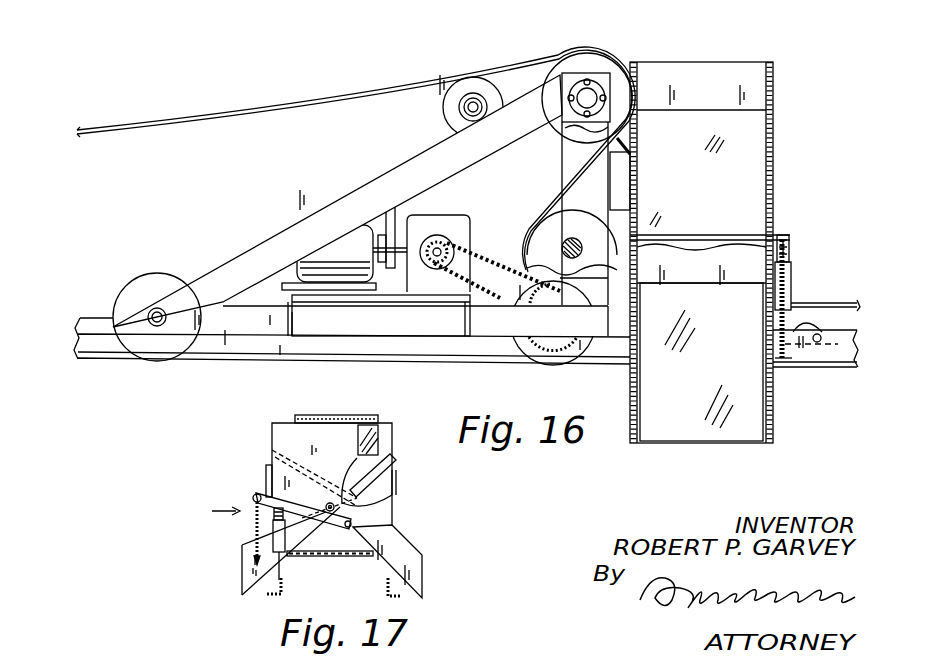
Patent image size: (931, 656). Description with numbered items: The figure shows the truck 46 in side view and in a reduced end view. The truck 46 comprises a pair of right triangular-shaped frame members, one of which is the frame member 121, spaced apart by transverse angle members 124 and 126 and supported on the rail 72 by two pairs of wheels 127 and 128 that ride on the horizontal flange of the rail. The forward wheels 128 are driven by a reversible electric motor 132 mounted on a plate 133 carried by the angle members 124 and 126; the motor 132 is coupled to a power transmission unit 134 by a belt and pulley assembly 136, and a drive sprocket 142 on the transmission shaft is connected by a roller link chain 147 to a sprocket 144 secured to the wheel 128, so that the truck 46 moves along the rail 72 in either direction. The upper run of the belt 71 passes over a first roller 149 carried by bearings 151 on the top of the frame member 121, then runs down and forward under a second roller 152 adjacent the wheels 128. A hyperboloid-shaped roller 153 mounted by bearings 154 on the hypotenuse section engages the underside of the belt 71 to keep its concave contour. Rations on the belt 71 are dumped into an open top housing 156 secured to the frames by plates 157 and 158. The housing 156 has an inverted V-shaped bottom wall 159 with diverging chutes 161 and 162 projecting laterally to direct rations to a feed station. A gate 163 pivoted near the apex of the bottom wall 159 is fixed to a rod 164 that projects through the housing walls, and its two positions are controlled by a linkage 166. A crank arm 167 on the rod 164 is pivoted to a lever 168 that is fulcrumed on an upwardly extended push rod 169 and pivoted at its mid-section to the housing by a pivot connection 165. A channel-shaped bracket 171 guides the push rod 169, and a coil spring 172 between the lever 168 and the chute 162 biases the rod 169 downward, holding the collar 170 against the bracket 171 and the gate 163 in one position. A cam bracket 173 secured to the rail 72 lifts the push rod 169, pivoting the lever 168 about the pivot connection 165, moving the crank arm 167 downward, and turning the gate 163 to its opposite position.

In FIG. 16, the truck 46 is at (493, 50).
In FIG. 16, the belt 71 is at (283, 105).
In FIG. 17, the belt 71 is at (332, 557).
In FIG. 16, the rail 72 is at (103, 348).
In FIG. 16, the frame member 121 is at (345, 197).
In FIG. 16, the angle member 124 is at (272, 290).
In FIG. 16, the angle member 126 is at (456, 322).
In FIG. 16, the wheel 127 is at (170, 275).
In FIG. 16, the wheel 128 is at (567, 357).
In FIG. 16, the electric motor 132 is at (372, 250).
In FIG. 16, the plate 133 is at (368, 293).
In FIG. 16, the power transmission unit 134 is at (455, 216).
In FIG. 16, the belt and pulley assembly 136 is at (396, 212).
In FIG. 16, the drive sprocket 142 is at (468, 243).
In FIG. 16, the sprocket 144 is at (551, 300).
In FIG. 16, the roller link chain 147 is at (522, 242).
In FIG. 16, the first roller 149 is at (590, 70).
In FIG. 17, the first roller 149 is at (288, 421).
In FIG. 16, the bearing 151 is at (600, 85).
In FIG. 16, the second roller 152 is at (574, 244).
In FIG. 16, the hyperboloid-shaped roller 153 is at (447, 107).
In FIG. 16, the bearing 154 is at (470, 112).
In FIG. 16, the housing 156 is at (770, 122).
In FIG. 17, the housing 156 is at (272, 458).
In FIG. 16, the plate 157 is at (633, 169).
In FIG. 17, the plate 157 is at (397, 487).
In FIG. 17, the plate 158 is at (268, 479).
In FIG. 17, the bottom wall 159 is at (310, 533).
In FIG. 17, the chute 161 is at (422, 548).
In FIG. 16, the chute 162 is at (772, 404).
In FIG. 17, the chute 162 is at (244, 565).
In FIG. 16, the gate 163 is at (732, 186).
In FIG. 17, the gate 163 is at (392, 462).
In FIG. 16, the rod 164 is at (700, 235).
In FIG. 17, the rod 164 is at (330, 503).
In FIG. 17, the pivot connection 165 is at (297, 500).
In FIG. 17, the linkage 166 is at (202, 514).
In FIG. 17, the crank arm 167 is at (362, 517).
In FIG. 16, the lever 168 is at (790, 235).
In FIG. 17, the lever 168 is at (256, 498).
In FIG. 16, the push rod 169 is at (793, 246).
In FIG. 17, the push rod 169 is at (281, 558).
In FIG. 16, the collar 170 is at (796, 262).
In FIG. 16, the channel-shaped bracket 171 is at (792, 280).
In FIG. 16, the coil spring 172 is at (792, 301).
In FIG. 17, the coil spring 172 is at (255, 531).
In FIG. 17, the cam bracket 173 is at (283, 592).